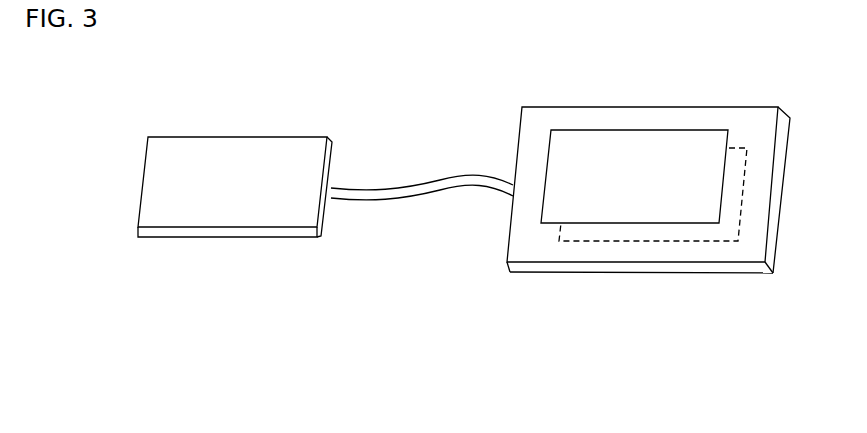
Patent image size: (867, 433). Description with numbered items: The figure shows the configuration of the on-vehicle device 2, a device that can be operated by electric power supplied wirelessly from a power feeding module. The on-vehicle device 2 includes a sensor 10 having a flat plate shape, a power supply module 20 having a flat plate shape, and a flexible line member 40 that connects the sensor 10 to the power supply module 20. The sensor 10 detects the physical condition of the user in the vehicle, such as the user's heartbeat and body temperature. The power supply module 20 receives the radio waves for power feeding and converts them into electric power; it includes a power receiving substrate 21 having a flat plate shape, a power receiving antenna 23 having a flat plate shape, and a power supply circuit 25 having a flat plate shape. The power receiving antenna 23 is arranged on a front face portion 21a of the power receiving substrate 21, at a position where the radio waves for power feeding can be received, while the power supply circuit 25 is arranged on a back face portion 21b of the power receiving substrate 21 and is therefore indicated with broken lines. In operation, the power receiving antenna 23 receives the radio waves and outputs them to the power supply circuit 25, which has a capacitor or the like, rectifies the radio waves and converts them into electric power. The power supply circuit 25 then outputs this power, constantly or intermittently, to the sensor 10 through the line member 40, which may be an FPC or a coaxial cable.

The on-vehicle device 2 is at (398, 337).
The sensor 10 is at (249, 136).
The line member 40 is at (380, 188).
The power supply module 20 is at (608, 303).
The power receiving substrate 21 is at (530, 275).
The front face portion 21a is at (550, 118).
The back face portion 21b is at (747, 276).
The power receiving antenna 23 is at (700, 130).
The power supply circuit 25 is at (786, 190).